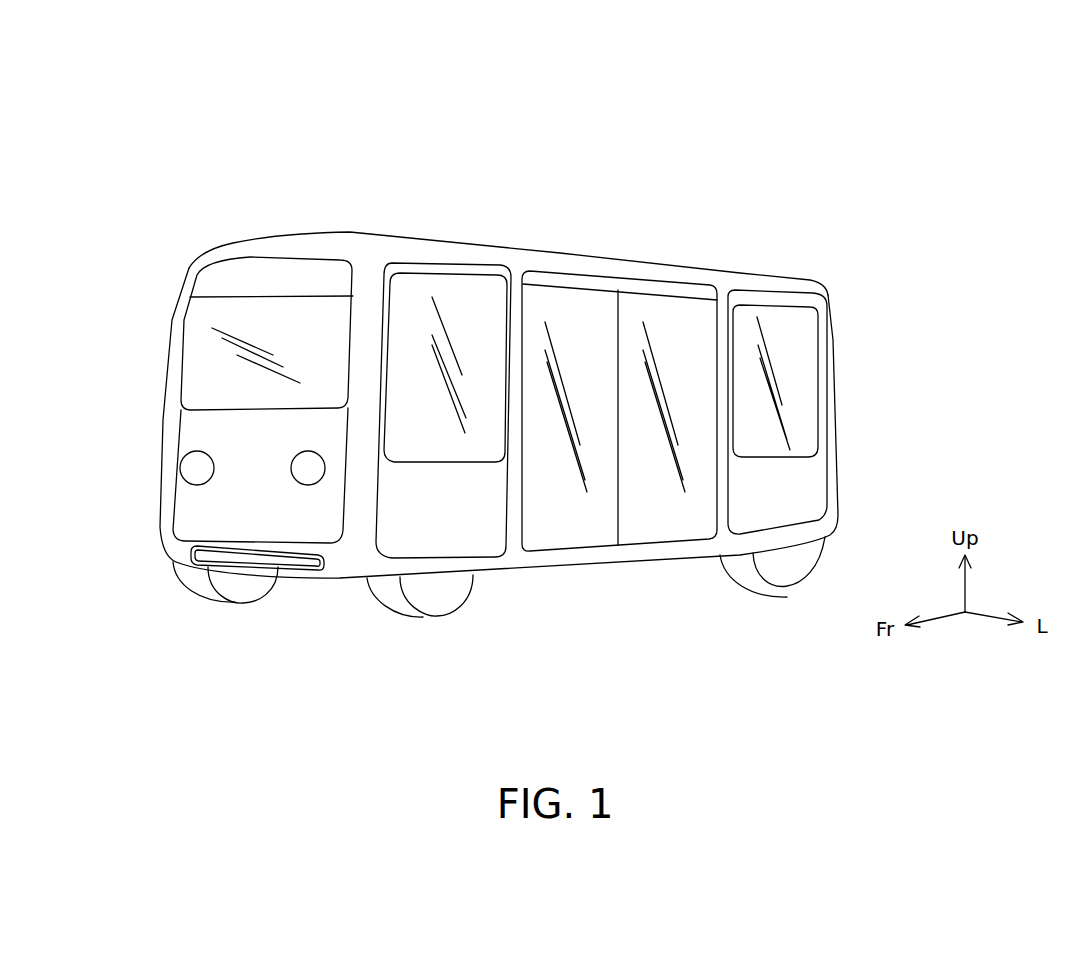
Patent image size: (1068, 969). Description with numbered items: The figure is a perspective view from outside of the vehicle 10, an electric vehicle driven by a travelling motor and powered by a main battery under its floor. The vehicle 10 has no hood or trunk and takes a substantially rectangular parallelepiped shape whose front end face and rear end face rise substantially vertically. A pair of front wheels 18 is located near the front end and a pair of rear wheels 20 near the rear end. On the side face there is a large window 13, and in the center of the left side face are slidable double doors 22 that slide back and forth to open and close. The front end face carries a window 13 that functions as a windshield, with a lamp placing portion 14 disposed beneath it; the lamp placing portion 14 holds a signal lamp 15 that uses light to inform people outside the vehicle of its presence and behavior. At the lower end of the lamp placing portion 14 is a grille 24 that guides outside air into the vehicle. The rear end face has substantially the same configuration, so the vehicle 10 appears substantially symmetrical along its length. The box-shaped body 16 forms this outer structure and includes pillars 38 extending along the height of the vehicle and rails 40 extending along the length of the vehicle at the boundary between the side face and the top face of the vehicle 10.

The vehicle 10 is at (503, 150).
The window 13 is at (252, 308).
The lamp placing portion 14 is at (190, 432).
The signal lamp 15 is at (178, 468).
The body 16 is at (380, 223).
The front wheels 18 is at (193, 582).
The rear wheels 20 is at (810, 563).
The slidable double doors 22 is at (628, 300).
The grille 24 is at (247, 558).
The pillars 38 is at (182, 317).
The rails 40 is at (662, 270).